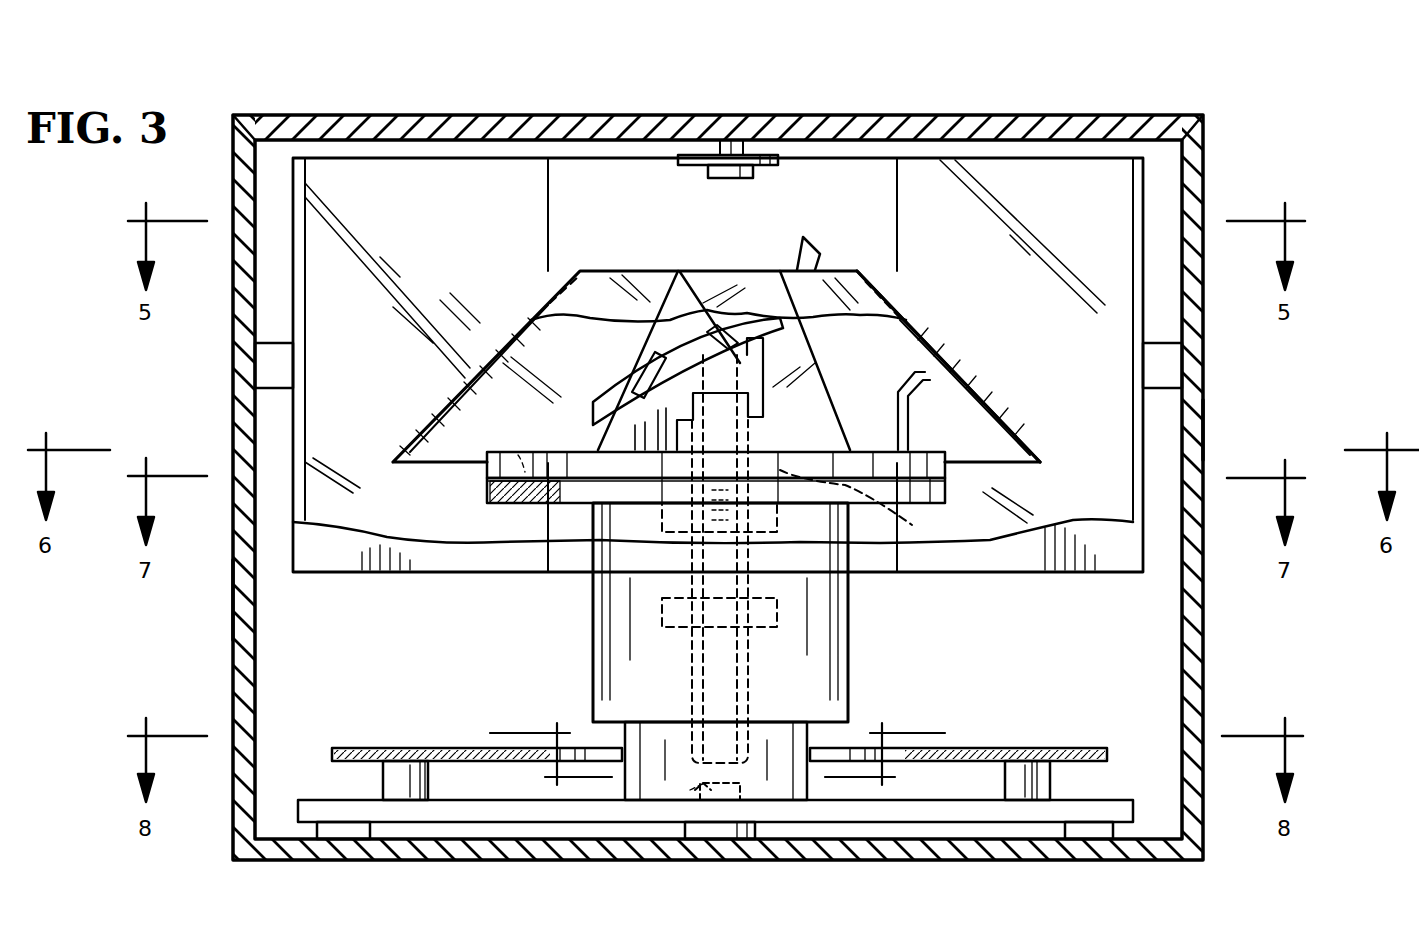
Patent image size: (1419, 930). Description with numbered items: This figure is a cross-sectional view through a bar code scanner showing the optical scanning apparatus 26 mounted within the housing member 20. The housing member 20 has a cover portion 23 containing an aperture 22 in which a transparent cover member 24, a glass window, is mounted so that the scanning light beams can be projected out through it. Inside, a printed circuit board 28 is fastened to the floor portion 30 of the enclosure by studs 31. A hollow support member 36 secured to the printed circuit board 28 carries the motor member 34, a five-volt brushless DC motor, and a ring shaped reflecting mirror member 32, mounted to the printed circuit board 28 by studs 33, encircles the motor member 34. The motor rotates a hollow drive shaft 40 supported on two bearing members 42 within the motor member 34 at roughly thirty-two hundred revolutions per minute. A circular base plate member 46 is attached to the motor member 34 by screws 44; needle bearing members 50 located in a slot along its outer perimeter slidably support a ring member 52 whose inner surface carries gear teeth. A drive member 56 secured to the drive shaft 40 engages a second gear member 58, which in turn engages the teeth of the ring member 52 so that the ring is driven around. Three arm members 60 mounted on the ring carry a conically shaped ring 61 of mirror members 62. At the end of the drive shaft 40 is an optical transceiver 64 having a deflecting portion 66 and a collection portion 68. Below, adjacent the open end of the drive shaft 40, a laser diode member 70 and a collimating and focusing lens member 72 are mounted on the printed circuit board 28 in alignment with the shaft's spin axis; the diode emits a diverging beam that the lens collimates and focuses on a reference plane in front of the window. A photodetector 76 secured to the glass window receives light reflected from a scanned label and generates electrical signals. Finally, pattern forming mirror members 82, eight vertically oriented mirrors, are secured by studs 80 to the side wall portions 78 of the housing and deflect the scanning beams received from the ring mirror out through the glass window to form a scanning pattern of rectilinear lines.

The housing member 20 is at (1205, 650).
The aperture 22 is at (317, 128).
The cover portion 23 is at (1170, 115).
The transparent cover member 24 is at (825, 115).
The optical scanning apparatus 26 is at (930, 300).
The printed circuit board 28 is at (445, 810).
The floor portion 30 is at (538, 850).
The studs 31 is at (340, 835).
The ring shaped reflecting mirror member 32 is at (410, 748).
The studs 33 is at (400, 780).
The motor member 34 is at (593, 680).
The hollow support member 36 is at (812, 783).
The hollow drive shaft 40 is at (748, 672).
The bearing members 42 is at (777, 612).
The screws 44 is at (765, 470).
The circular base plate member 46 is at (487, 495).
The needle bearing members 50 is at (512, 503).
The ring member 52 is at (487, 462).
The drive member 56 is at (864, 503).
The second gear member 58 is at (525, 455).
The arm members 60 is at (630, 380).
The conically shaped ring 61 is at (760, 268).
The mirror members 62 is at (1000, 415).
The optical transceiver 64 is at (823, 400).
The deflecting portion 66 is at (683, 272).
The collection portion 68 is at (780, 330).
The laser diode member 70 is at (715, 830).
The collimating and focusing lens member 72 is at (700, 783).
The photodetector 76 is at (720, 148).
The side wall portions 78 is at (245, 600).
The studs 80 is at (262, 355).
The pattern forming mirror members 82 is at (400, 178).